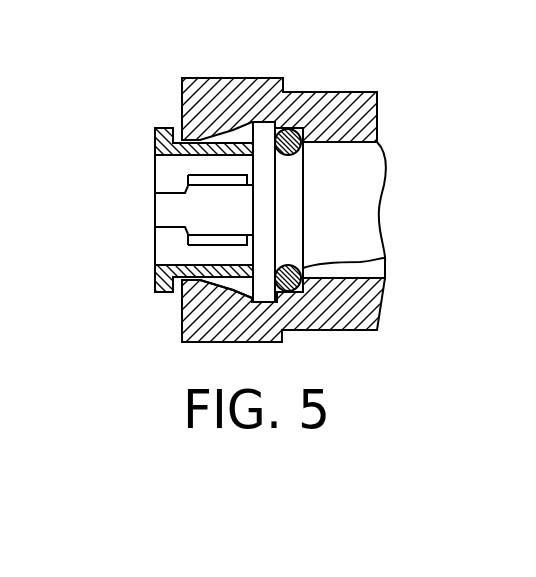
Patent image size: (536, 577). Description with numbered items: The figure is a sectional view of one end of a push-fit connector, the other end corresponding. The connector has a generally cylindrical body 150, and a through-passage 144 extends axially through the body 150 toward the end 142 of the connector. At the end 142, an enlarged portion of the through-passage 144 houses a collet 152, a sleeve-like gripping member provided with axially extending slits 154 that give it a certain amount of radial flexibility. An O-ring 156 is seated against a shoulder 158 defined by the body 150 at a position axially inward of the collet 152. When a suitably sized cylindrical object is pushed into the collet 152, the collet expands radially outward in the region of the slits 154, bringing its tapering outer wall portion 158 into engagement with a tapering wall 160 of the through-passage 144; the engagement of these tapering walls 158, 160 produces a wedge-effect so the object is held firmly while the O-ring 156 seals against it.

The end of the push-fit connector 142 is at (267, 78).
The through-passage 144 is at (378, 150).
The body 150 is at (345, 92).
The collet 152 is at (153, 277).
The axially extending slits 154 is at (155, 226).
The O-ring 156 is at (385, 258).
The tapering outer wall portion 158 is at (276, 131).
The tapering wall 160 is at (203, 282).